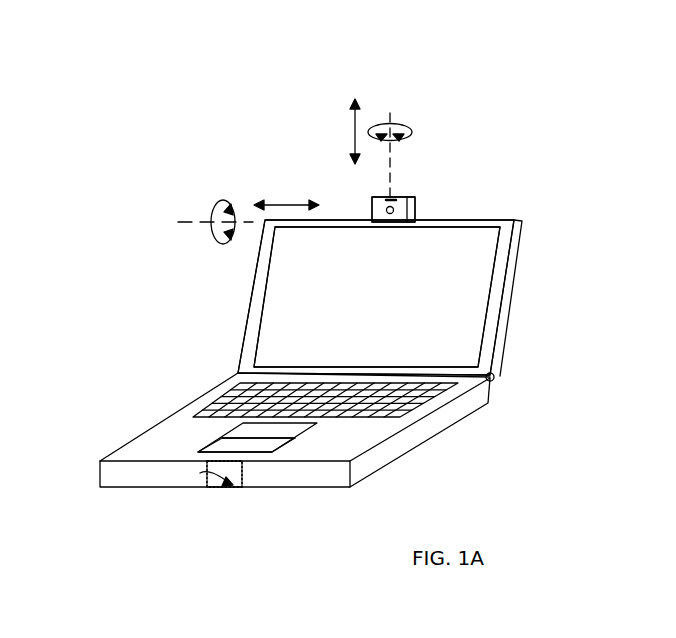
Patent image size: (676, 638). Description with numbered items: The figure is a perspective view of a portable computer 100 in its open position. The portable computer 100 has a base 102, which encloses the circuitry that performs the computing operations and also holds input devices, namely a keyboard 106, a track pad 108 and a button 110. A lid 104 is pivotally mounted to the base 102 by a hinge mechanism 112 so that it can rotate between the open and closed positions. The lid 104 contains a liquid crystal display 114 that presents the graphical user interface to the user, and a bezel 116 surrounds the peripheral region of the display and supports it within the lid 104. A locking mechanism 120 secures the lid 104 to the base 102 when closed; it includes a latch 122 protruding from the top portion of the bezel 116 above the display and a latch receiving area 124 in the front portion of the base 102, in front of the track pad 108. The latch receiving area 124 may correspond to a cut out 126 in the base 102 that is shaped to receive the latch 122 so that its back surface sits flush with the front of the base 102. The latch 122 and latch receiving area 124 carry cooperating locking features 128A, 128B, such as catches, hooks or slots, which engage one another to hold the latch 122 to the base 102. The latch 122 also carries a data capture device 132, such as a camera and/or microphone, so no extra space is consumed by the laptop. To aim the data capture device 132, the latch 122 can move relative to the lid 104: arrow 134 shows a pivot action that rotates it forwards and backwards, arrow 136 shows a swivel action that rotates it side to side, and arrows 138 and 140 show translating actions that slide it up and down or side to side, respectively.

The portable computer 100 is at (563, 168).
The base 102 is at (410, 450).
The lid 104 is at (517, 270).
The keyboard 106 is at (223, 398).
The track pad 108 is at (232, 430).
The button 110 is at (283, 447).
The hinge mechanism 112 is at (494, 379).
The liquid crystal display 114 is at (328, 271).
The bezel 116 is at (488, 323).
The locking mechanism 120 is at (477, 198).
The latch 122 is at (372, 207).
The latch receiving area 124 is at (232, 490).
The cut out 126 is at (243, 475).
The locking feature 128A is at (392, 198).
The locking feature 128B is at (200, 473).
The data capture device 132 is at (417, 210).
The arrow 134 is at (232, 213).
The arrow 136 is at (403, 127).
The arrow 138 is at (354, 117).
The arrow 140 is at (287, 205).